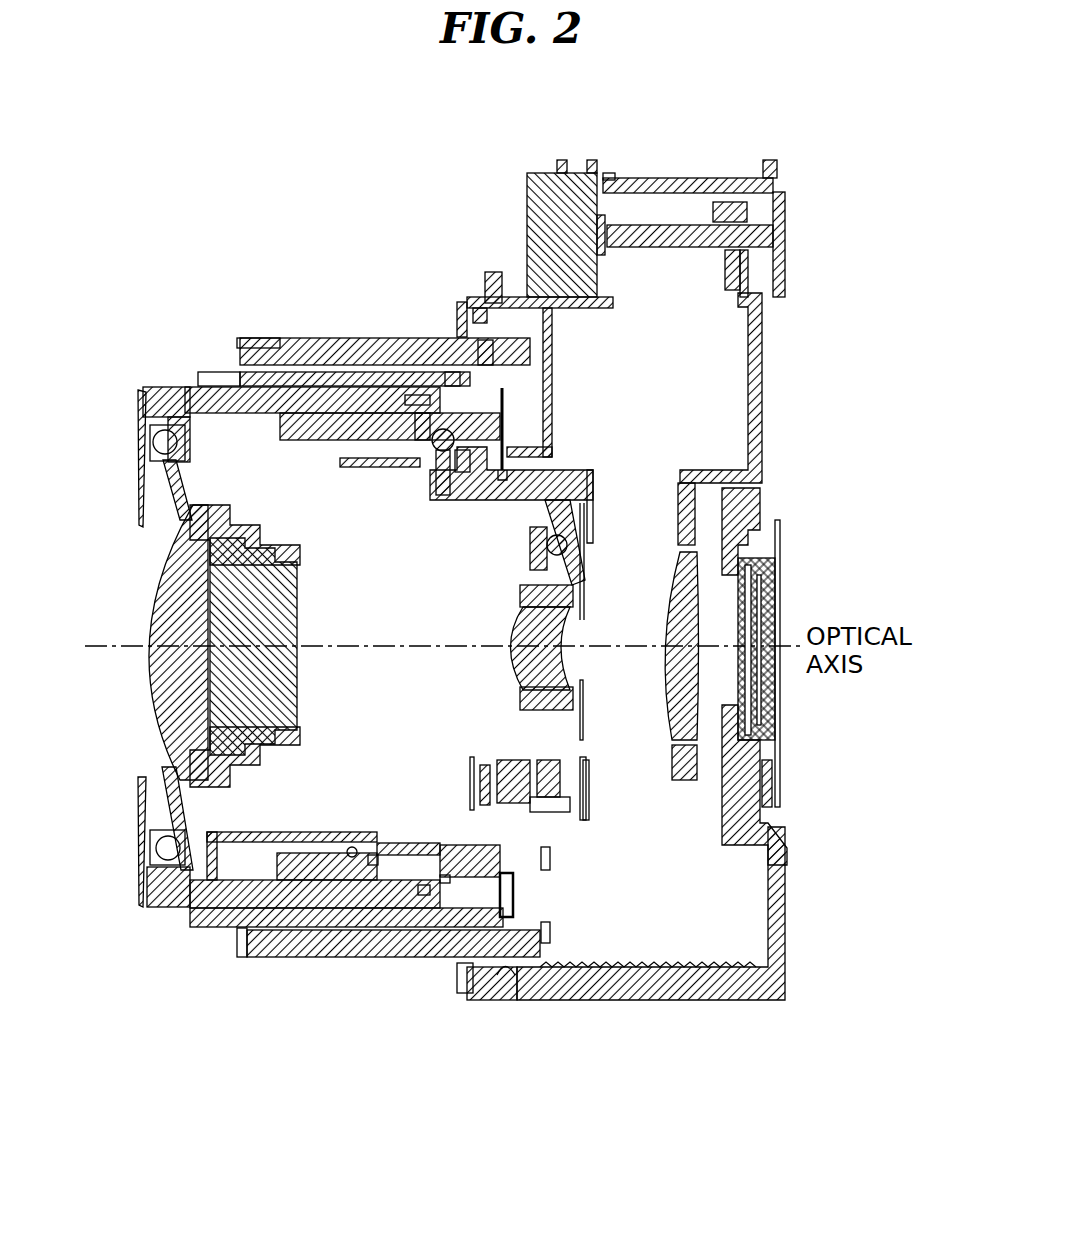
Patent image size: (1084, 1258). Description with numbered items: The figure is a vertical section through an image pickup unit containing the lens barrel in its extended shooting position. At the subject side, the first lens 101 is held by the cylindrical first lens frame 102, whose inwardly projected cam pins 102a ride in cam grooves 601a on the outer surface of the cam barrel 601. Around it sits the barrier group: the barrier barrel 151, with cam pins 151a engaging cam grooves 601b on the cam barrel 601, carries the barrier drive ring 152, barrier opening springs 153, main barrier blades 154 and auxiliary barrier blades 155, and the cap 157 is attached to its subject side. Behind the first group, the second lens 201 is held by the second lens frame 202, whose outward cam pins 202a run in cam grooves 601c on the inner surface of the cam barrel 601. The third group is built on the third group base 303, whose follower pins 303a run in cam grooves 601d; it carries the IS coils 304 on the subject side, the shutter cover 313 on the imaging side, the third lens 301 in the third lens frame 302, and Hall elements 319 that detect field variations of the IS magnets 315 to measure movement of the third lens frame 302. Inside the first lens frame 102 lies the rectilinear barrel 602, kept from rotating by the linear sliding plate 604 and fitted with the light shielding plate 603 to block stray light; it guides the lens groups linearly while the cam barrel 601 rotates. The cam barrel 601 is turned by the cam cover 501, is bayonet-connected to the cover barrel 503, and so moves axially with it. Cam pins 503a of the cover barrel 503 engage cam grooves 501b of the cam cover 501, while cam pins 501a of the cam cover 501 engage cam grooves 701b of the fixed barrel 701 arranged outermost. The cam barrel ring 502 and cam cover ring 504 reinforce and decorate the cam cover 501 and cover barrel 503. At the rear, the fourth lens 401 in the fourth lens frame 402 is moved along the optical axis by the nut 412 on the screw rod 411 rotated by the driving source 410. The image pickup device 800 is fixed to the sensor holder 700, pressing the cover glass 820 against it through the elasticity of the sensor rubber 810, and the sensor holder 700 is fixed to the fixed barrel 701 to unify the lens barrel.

The first lens 101 is at (185, 722).
The first lens frame 102 is at (215, 890).
The cam pins 102a is at (423, 893).
The barrier barrel 151 is at (217, 398).
The cam pins 151a is at (417, 413).
The barrier drive ring 152 is at (173, 803).
The barrier opening springs 153 is at (166, 438).
The main barrier blades 154 is at (163, 405).
The auxiliary barrier blades 155 is at (148, 905).
The cap 157 is at (137, 408).
The second lens 201 is at (253, 697).
The second lens frame 202 is at (258, 832).
The cam pins 202a is at (373, 862).
The third lens 301 is at (555, 662).
The third lens frame 302 is at (550, 710).
The third group base 303 is at (568, 823).
The follower pins 303a is at (443, 487).
The IS coils 304 is at (550, 807).
The shutter cover 313 is at (590, 800).
The IS magnets 315 is at (507, 750).
The Hall elements 319 is at (485, 775).
The fourth lens 401 is at (674, 605).
The fourth lens frame 402 is at (707, 474).
The driving source 410 is at (578, 215).
The screw rod 411 is at (650, 235).
The nut 412 is at (727, 208).
The cam cover 501 is at (330, 345).
The cam pins 501a is at (512, 975).
The cam grooves 501b is at (483, 347).
The cam barrel ring 502 is at (255, 340).
The cover barrel 503 is at (307, 380).
The cam pins 503a is at (452, 360).
The cam cover ring 504 is at (225, 375).
The cam barrel 601 is at (310, 857).
The cam grooves 601a is at (442, 883).
The cam grooves 601b is at (423, 420).
The cam grooves 601c is at (352, 856).
The cam grooves 601d is at (440, 440).
The rectilinear barrel 602 is at (450, 848).
The light shielding plate 603 is at (502, 400).
The linear sliding plate 604 is at (540, 300).
The sensor holder 700 is at (782, 240).
The fixed barrel 701 is at (727, 990).
The cam grooves 701b is at (482, 962).
The image pickup device 800 is at (770, 723).
The sensor rubber 810 is at (760, 788).
The cover glass 820 is at (727, 680).